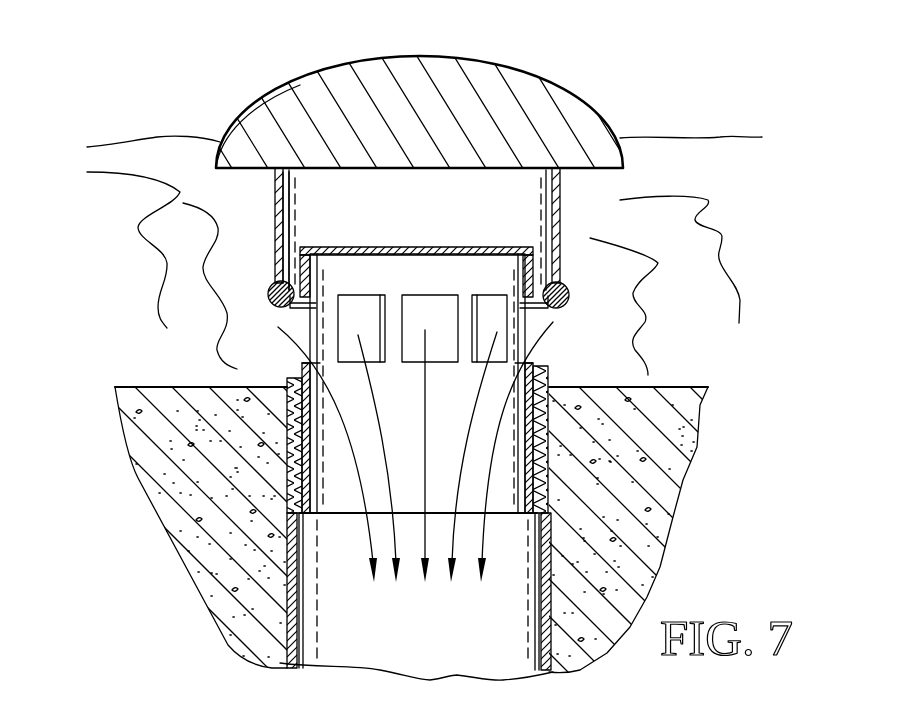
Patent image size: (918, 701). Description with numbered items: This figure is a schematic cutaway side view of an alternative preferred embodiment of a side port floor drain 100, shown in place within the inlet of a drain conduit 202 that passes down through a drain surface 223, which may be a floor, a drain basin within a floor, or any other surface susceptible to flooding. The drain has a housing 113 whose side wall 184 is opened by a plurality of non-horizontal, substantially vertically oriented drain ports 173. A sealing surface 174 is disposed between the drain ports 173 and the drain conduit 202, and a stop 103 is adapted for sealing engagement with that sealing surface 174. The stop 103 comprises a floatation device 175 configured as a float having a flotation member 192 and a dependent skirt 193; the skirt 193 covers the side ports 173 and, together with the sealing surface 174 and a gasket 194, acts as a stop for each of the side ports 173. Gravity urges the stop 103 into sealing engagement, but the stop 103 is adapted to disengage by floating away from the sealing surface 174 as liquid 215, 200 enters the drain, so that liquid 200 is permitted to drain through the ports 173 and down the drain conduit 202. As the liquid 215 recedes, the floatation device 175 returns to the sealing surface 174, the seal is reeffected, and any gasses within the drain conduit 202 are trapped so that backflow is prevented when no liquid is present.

The side port floor drain 100 is at (658, 86).
The stop 103 is at (563, 222).
The housing 113 is at (303, 492).
The drain ports 173 is at (388, 305).
The sealing surface 174 is at (546, 382).
The floatation device 175 is at (500, 66).
The side wall 184 is at (523, 473).
The flotation member 192 is at (282, 82).
The dependent skirt 193 is at (275, 220).
The gasket 194 is at (567, 304).
The liquid 200 is at (370, 547).
The drain conduit 202 is at (542, 612).
The liquid 215 is at (733, 137).
The drain surface 223 is at (685, 387).